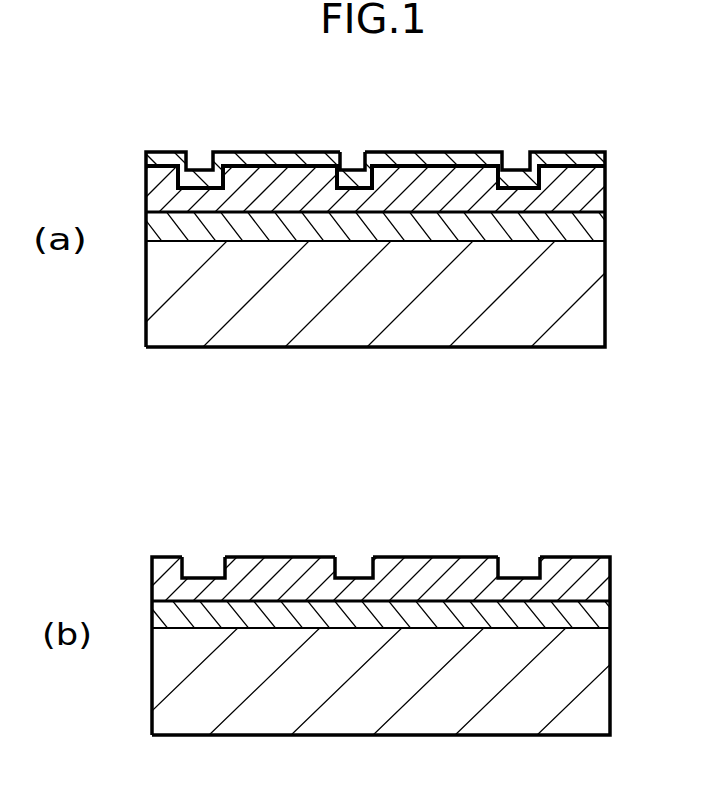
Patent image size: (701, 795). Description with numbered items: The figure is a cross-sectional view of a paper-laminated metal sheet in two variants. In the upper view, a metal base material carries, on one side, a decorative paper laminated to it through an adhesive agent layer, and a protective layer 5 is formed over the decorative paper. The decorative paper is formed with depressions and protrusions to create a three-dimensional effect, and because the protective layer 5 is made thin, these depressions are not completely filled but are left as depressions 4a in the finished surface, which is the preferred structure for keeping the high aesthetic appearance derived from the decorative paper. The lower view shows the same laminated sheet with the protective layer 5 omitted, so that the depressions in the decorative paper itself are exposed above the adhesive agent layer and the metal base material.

The depressions 4a is at (357, 146).
The protective layer 5 is at (575, 150).